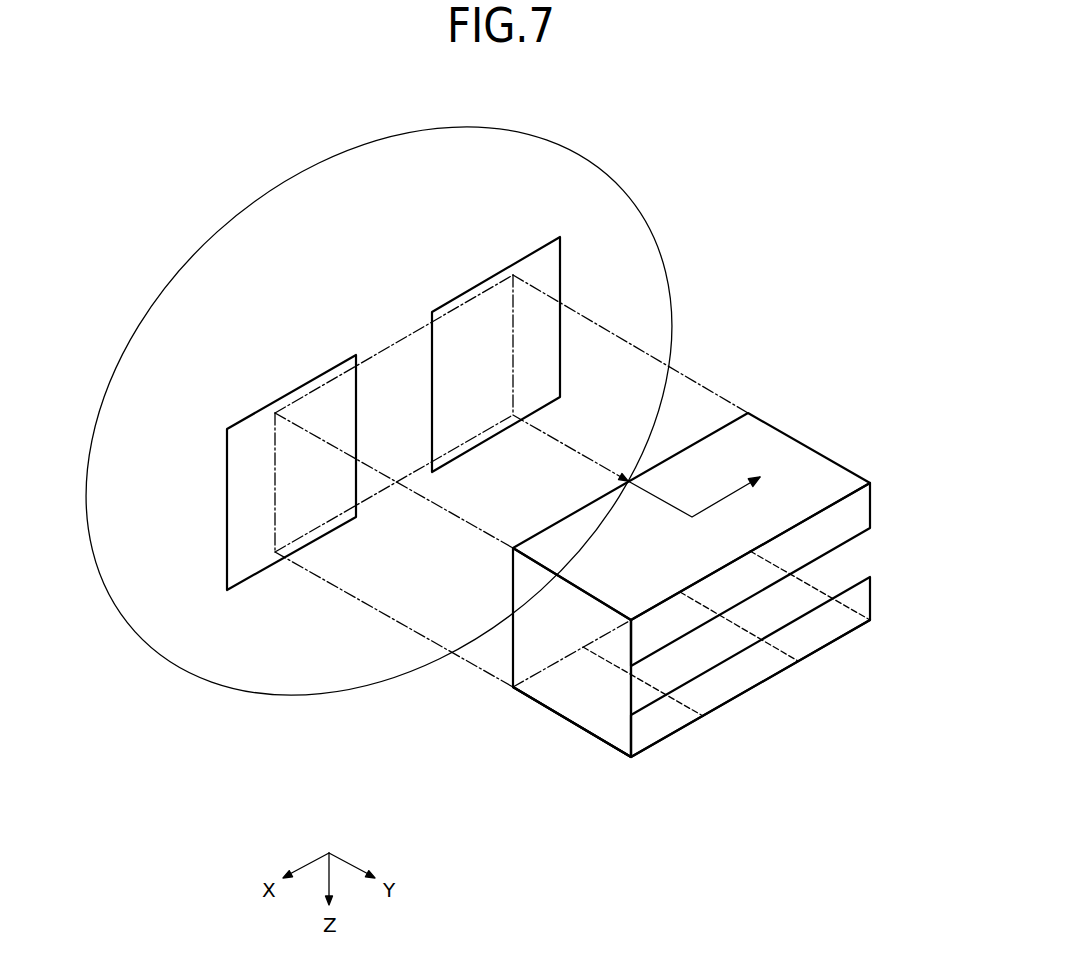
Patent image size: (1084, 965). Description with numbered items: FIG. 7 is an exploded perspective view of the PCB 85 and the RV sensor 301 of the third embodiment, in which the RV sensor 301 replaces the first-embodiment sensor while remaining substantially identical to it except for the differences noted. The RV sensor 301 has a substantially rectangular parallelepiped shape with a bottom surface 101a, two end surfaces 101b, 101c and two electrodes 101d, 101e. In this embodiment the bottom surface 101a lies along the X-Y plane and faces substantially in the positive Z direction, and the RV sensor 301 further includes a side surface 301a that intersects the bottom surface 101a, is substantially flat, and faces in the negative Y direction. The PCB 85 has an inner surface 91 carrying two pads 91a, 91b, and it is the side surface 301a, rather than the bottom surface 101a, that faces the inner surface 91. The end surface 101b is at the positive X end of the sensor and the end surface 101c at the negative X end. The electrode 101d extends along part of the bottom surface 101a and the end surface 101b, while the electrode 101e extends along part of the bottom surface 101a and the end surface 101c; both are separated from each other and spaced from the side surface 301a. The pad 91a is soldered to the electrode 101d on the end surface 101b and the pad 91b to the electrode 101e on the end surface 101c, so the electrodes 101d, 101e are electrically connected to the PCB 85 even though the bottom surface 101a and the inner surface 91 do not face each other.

The PCB 85 is at (392, 410).
The inner surface 91 is at (205, 652).
The pad 91a is at (238, 456).
The pad 91b is at (548, 266).
The RV sensor 301 is at (711, 572).
The side surface 301a is at (722, 428).
The bottom surface 101a is at (728, 700).
The end surface 101b is at (543, 682).
The end surface 101c is at (870, 500).
The electrode 101d is at (595, 715).
The electrode 101e is at (870, 596).